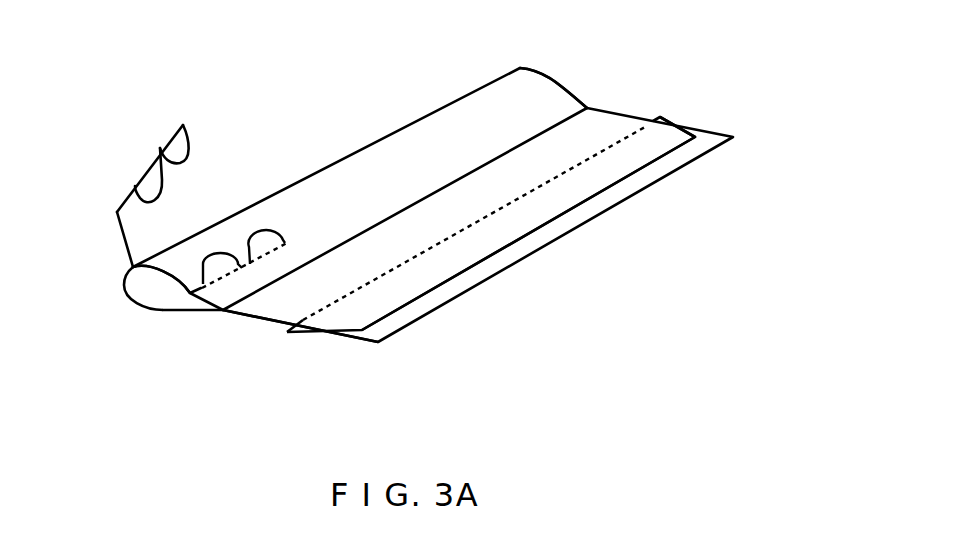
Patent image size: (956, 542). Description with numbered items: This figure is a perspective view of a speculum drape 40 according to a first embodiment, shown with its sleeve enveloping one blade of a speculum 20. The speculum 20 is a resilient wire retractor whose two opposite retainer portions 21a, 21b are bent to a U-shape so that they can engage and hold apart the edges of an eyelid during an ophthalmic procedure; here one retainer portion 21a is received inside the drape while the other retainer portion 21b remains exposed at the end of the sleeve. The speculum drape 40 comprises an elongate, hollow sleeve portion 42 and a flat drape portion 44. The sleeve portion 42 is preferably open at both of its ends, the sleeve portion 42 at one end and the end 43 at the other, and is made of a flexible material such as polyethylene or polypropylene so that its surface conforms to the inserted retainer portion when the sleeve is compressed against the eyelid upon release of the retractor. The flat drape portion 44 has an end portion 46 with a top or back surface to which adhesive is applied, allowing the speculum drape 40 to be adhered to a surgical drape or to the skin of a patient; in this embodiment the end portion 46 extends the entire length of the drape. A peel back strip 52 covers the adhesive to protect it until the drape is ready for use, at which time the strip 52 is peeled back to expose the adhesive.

The speculum 20 is at (150, 282).
The retainer portion 21a is at (213, 284).
The retainer portion 21b is at (136, 186).
The speculum drape 40 is at (383, 122).
The sleeve portion 42 is at (163, 312).
The sleeve end 43 is at (557, 82).
The drape portion 44 is at (282, 319).
The end portion 46 is at (377, 302).
The peel back strip 52 is at (697, 160).